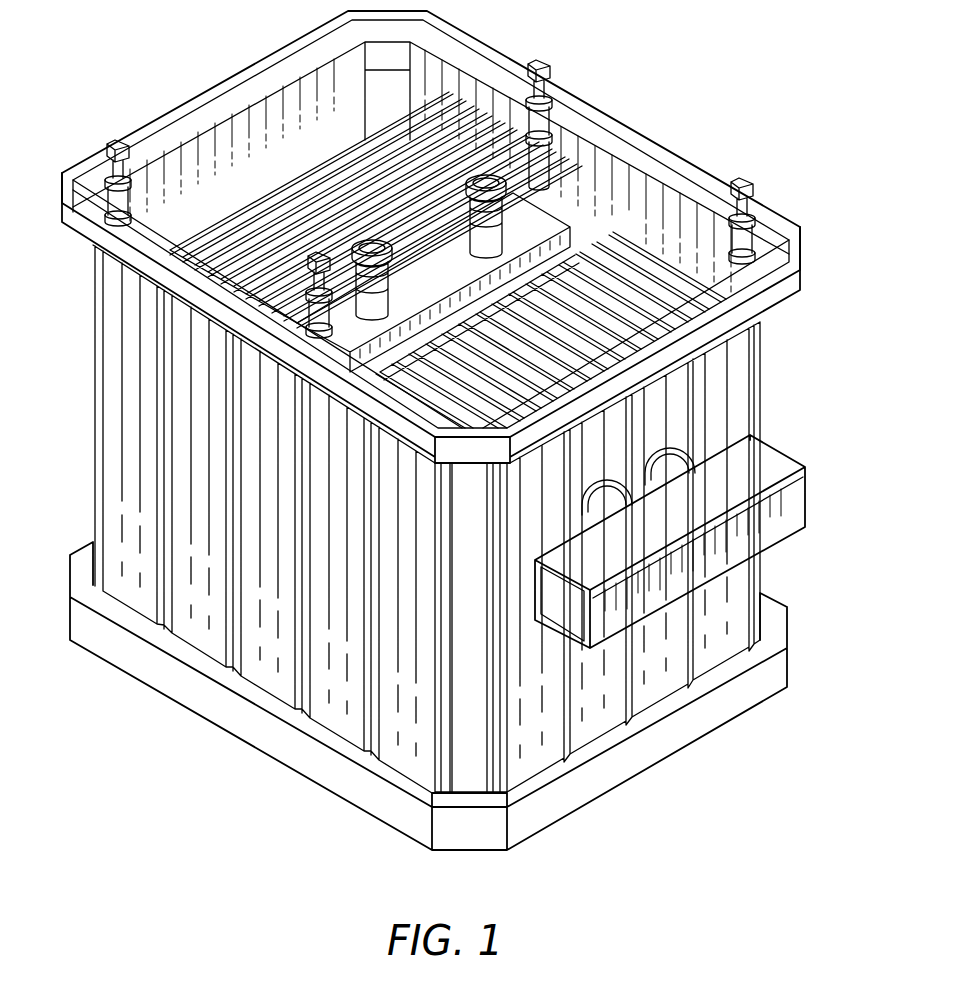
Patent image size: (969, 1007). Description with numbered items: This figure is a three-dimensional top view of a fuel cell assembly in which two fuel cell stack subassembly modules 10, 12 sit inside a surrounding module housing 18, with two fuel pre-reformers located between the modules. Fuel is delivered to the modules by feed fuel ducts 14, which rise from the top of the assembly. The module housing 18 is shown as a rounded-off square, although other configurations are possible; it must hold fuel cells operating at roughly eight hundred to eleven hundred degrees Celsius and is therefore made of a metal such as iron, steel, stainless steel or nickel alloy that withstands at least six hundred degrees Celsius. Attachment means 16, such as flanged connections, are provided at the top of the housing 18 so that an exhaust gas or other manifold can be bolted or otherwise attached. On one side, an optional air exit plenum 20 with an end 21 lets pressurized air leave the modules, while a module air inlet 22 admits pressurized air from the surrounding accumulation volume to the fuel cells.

The fuel cell stack subassembly module 10 is at (430, 148).
The fuel cell stack subassembly module 12 is at (617, 282).
The feed fuel duct 14 is at (432, 262).
The attachment means 16 is at (748, 180).
The module housing 18 is at (760, 578).
The air exit plenum 20 is at (701, 536).
The end 21 is at (806, 493).
The module air inlet 22 is at (690, 455).